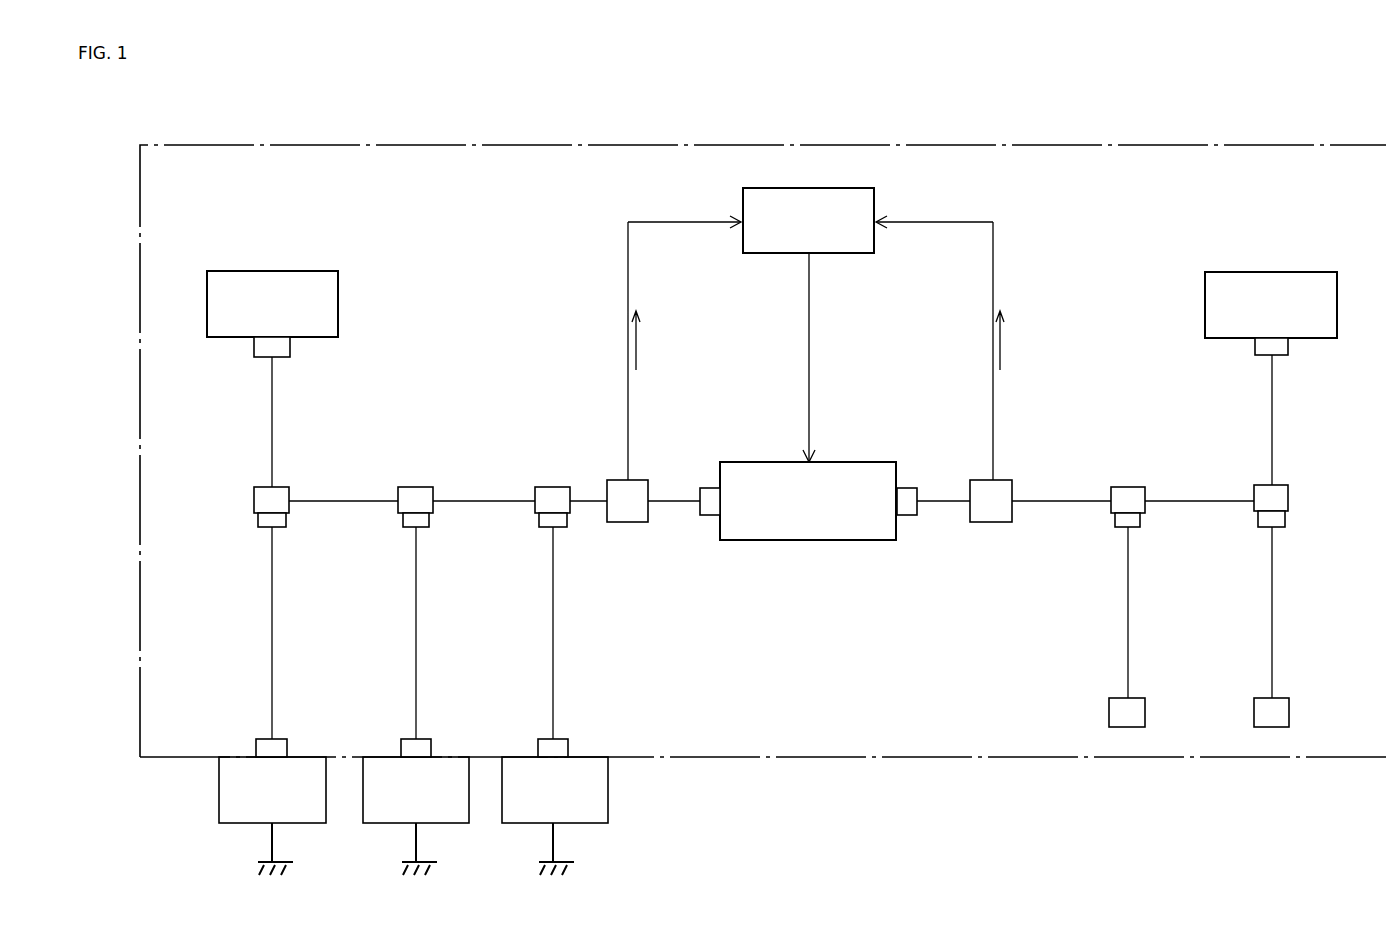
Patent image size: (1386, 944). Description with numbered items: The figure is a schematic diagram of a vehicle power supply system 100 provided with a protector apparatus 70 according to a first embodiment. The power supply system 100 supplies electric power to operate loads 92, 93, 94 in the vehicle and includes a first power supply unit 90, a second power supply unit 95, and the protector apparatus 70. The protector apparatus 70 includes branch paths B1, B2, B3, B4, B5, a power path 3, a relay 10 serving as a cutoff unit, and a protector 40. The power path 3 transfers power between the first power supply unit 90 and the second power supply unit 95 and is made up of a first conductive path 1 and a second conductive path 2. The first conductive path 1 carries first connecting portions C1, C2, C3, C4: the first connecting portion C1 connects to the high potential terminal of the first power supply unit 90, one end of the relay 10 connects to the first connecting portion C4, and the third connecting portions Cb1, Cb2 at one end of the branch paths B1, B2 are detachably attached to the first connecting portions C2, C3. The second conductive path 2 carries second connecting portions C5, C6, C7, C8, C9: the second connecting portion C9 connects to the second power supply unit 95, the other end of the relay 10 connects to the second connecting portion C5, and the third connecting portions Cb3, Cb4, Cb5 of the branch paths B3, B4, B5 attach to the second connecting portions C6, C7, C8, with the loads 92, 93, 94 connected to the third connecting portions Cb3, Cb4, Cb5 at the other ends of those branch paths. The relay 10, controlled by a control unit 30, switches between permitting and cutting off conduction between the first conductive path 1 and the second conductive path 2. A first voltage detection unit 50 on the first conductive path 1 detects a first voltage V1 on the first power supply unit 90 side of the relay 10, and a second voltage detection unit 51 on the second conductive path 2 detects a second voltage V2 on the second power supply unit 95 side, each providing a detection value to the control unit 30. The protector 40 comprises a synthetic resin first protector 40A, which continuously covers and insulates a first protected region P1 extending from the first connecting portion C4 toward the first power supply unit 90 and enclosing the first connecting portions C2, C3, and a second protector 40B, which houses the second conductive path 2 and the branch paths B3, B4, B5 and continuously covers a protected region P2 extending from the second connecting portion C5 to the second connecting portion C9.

The power supply system 100 is at (1160, 146).
The first conductive path 1 is at (927, 500).
The second conductive path 2 is at (275, 393).
The power path 3 is at (275, 425).
The relay 10 is at (853, 462).
The control unit 30 is at (874, 200).
The protector 40 is at (531, 477).
The first protector 40A is at (1037, 533).
The second protector 40B is at (552, 475).
The first voltage detection unit 50 is at (970, 513).
The second voltage detection unit 51 is at (637, 522).
The protector apparatus 70 is at (313, 500).
The first power supply unit 90 is at (1283, 272).
The second power supply unit 95 is at (295, 271).
The load 92 is at (608, 803).
The load 93 is at (469, 803).
The load 94 is at (326, 803).
The branch path B1 is at (1273, 606).
The branch path B2 is at (1129, 637).
The branch path B3 is at (554, 643).
The branch path B4 is at (417, 643).
The branch path B5 is at (273, 638).
The first connecting portion C1 is at (1290, 348).
The first connecting portion C2 is at (1288, 497).
The first connecting portion C3 is at (1110, 506).
The first connecting portion C4 is at (905, 488).
The second connecting portion C5 is at (710, 488).
The second connecting portion C6 is at (570, 512).
The second connecting portion C7 is at (433, 507).
The second connecting portion C8 is at (289, 505).
The second connecting portion C9 is at (255, 343).
The third connecting portion Cb1 is at (1287, 519).
The third connecting portion Cb2 is at (1142, 520).
The third connecting portion Cb3 is at (540, 519).
The third connecting portion Cb4 is at (402, 522).
The third connecting portion Cb5 is at (257, 519).
The first protected region P1 is at (1123, 434).
The protected region P2 is at (228, 676).
The first voltage V1 is at (1013, 351).
The second voltage V2 is at (649, 351).